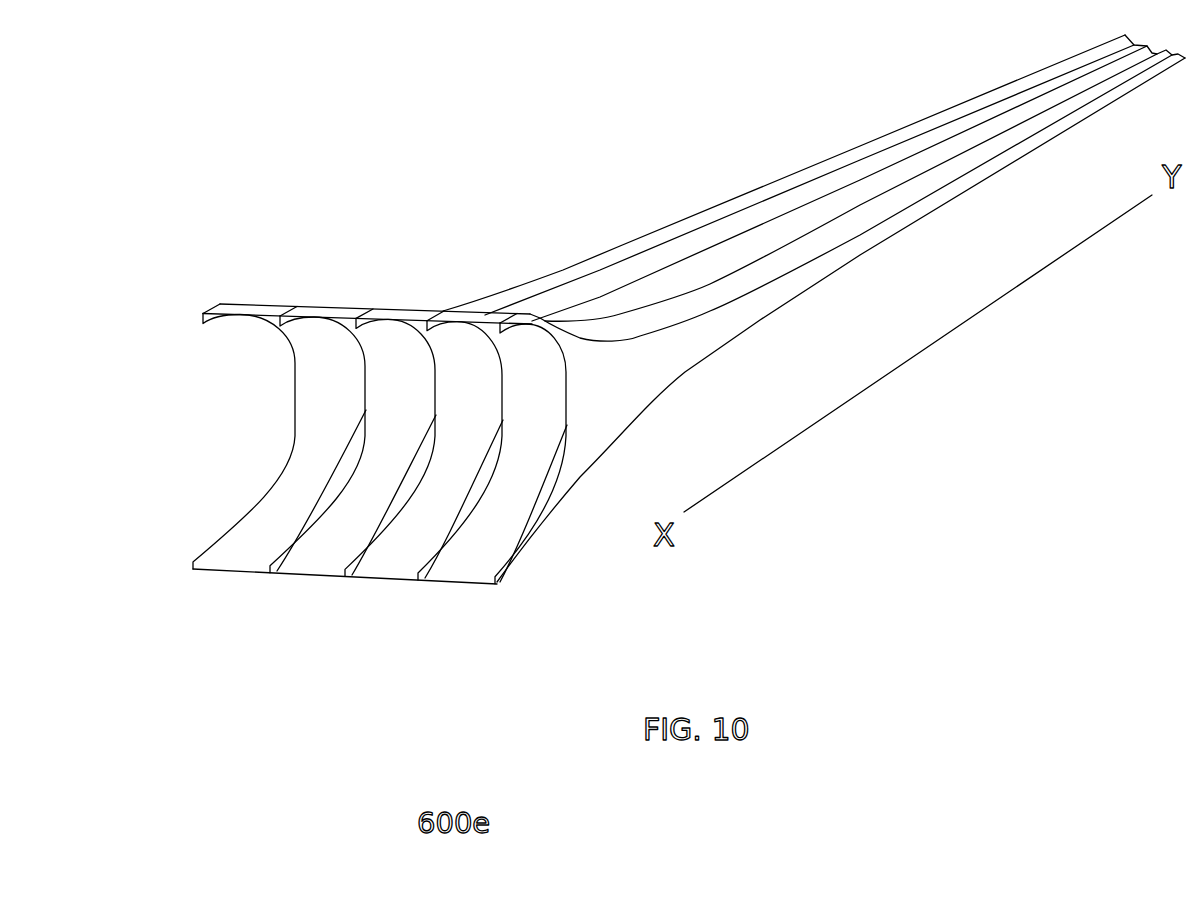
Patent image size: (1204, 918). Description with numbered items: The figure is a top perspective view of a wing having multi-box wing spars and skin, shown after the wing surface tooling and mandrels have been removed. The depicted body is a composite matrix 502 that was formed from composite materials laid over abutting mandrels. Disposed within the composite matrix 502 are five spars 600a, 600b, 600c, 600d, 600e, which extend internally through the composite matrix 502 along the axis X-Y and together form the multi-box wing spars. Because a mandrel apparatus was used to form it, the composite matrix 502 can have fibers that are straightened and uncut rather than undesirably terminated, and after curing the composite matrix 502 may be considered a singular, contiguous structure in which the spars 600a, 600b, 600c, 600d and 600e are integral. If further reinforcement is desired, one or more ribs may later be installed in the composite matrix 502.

The composite matrix 502 is at (718, 224).
The spar 600a is at (195, 569).
The spar 600b is at (268, 573).
The spar 600c is at (343, 577).
The spar 600d is at (418, 580).
The spar 600e is at (493, 583).